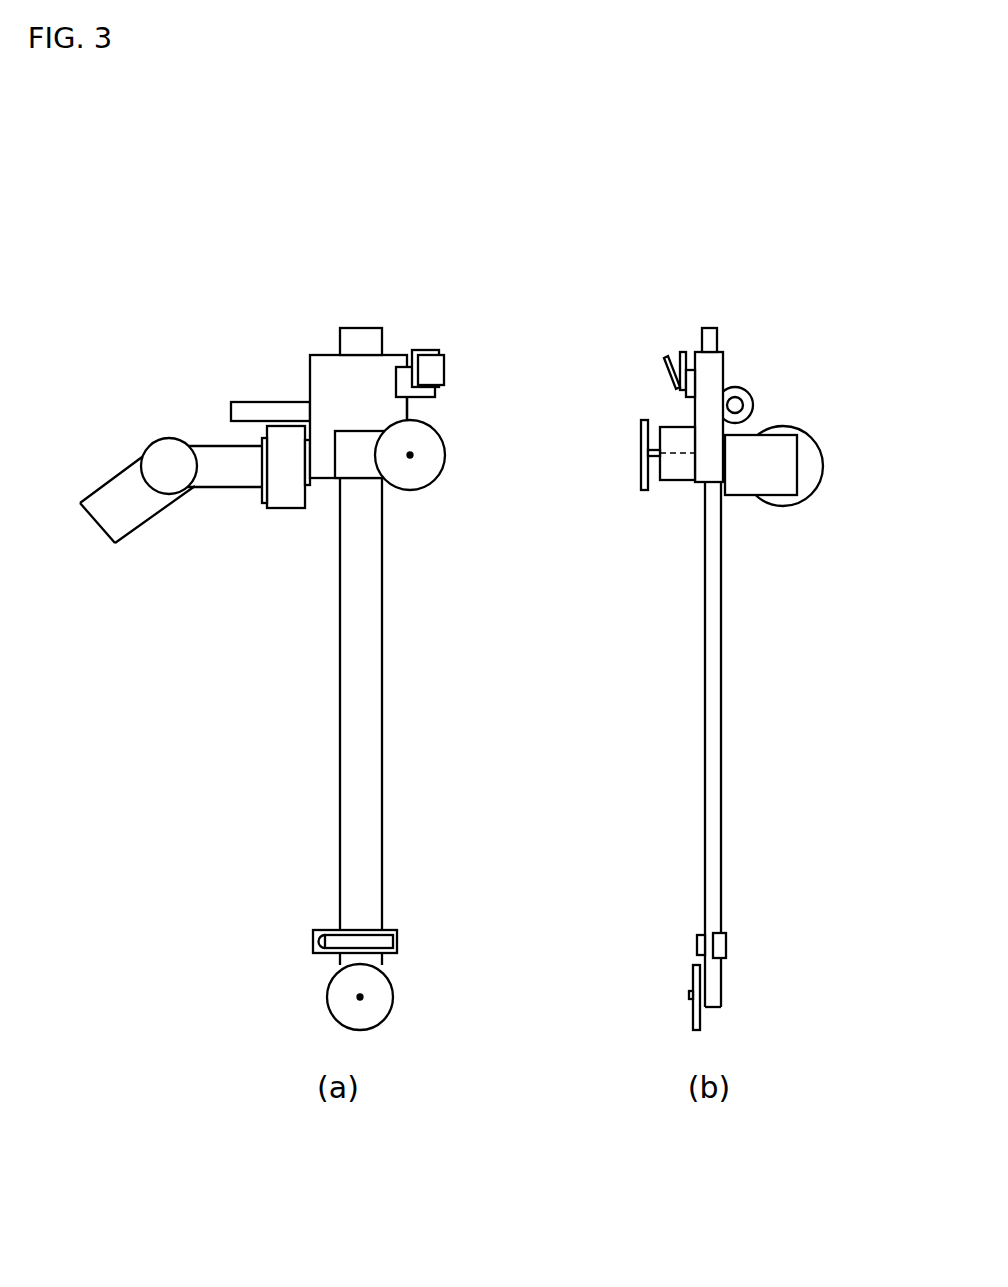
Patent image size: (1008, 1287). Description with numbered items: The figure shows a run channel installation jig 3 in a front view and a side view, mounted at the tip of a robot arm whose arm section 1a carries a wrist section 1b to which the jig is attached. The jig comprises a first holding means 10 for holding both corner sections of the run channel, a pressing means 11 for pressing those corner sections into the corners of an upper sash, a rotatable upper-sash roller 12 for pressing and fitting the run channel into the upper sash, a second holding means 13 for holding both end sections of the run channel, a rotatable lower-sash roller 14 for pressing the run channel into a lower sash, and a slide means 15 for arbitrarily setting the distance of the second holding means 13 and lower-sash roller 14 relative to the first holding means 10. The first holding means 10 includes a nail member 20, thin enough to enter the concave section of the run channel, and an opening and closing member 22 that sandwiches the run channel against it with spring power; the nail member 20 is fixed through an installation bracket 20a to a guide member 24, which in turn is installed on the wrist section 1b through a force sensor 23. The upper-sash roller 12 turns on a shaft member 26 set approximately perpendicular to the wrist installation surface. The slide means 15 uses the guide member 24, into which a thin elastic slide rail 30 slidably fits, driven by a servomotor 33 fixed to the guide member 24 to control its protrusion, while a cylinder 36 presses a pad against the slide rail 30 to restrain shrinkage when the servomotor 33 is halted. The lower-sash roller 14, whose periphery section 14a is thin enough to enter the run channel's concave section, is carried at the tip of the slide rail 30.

The arm section 1a is at (112, 478).
The wrist section 1b is at (222, 444).
The run channel installation jig 3 is at (398, 283).
The first holding means 10 is at (471, 326).
The pressing means 11 is at (420, 344).
The upper-sash roller 12 is at (447, 455).
The second holding means 13 is at (406, 922).
The lower-sash roller 14 is at (395, 998).
The periphery section 14a is at (690, 996).
The slide means 15 is at (418, 410).
The nail member 20 is at (427, 348).
The installation bracket 20a is at (442, 390).
The opening and closing member 22 is at (444, 362).
The force sensor 23 is at (267, 505).
The guide member 24 is at (325, 358).
The shaft member 26 is at (641, 454).
The slide rail 30 is at (377, 680).
The servomotor 33 is at (245, 400).
The cylinder 36 is at (343, 465).